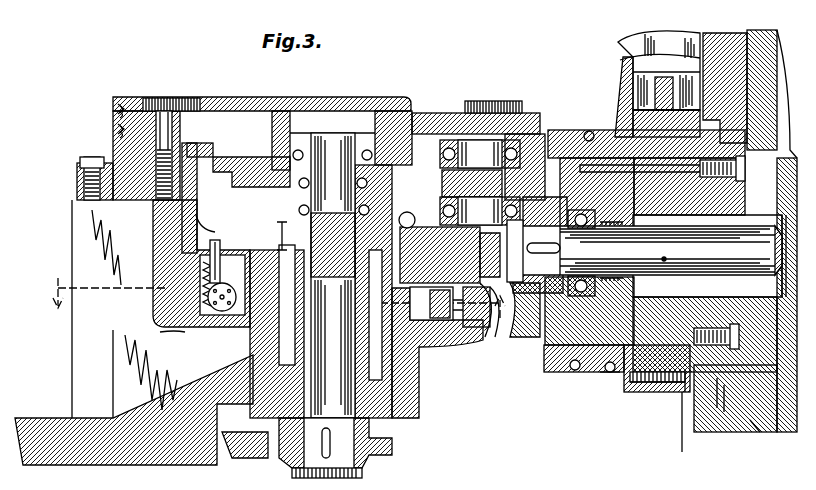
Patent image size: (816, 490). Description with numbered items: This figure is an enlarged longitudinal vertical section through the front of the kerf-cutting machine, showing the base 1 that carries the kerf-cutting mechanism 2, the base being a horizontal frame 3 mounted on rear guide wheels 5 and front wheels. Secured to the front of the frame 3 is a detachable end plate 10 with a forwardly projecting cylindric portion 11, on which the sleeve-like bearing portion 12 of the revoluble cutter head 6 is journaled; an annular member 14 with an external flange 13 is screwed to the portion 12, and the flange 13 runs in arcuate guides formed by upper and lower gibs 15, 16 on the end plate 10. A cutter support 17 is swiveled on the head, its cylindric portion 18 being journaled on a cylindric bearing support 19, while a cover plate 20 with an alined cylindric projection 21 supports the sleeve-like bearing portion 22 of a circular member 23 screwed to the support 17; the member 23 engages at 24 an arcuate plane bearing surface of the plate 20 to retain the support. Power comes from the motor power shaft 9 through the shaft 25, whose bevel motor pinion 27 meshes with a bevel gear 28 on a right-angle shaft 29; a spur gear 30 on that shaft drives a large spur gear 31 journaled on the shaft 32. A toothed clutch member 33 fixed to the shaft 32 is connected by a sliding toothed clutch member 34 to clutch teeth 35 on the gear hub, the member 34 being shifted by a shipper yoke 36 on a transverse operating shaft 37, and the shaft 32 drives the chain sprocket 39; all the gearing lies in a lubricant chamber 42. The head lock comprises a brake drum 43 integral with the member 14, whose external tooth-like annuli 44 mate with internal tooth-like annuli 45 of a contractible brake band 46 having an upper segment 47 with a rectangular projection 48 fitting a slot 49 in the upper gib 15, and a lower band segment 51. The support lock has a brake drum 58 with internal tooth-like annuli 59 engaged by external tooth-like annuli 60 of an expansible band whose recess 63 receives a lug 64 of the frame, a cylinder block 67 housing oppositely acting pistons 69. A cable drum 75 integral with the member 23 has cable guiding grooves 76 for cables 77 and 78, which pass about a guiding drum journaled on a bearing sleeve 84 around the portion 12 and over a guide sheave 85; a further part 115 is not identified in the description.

The kerf-cutting mechanism 2 is at (388, 87).
The horizontal frame 3 is at (781, 100).
The rear guide wheels 5 is at (278, 311).
The revoluble cutter head 6 is at (200, 290).
The power shaft 9 is at (644, 251).
The end plate 10 is at (754, 425).
The cylindric portion 11 is at (664, 366).
The sleeve-like bearing portion 12 is at (603, 369).
The annular external flange 13 is at (717, 408).
The annular member 14 is at (708, 395).
The upper gib 15 is at (772, 94).
The lower gib 16 is at (727, 412).
The cutter support 17 is at (193, 400).
The cylindric portion 18 is at (415, 392).
The cylindric bearing support 19 is at (258, 412).
The cover plate 20 is at (205, 145).
The cylindric projection 21 is at (284, 111).
The sleeve-like bearing portion 22 is at (265, 157).
The circular member 23 is at (429, 113).
The bearing engagement 24 is at (222, 140).
The shaft 25 is at (607, 373).
The bevel motor pinion 27 is at (539, 337).
The bevel gear 28 is at (560, 135).
The right-angle shaft 29 is at (479, 150).
The spur gear 30 is at (515, 134).
The large spur gear 31 is at (196, 215).
The shaft 32 is at (329, 157).
The toothed clutch member 33 is at (277, 237).
The sliding toothed clutch member 34 is at (280, 222).
The clutch teeth 35 is at (288, 194).
The shipper yoke 36 is at (406, 229).
The transverse operating shaft 37 is at (402, 157).
The chain sprocket 39 is at (392, 448).
The chamber 42 is at (197, 218).
The brake drum 43 is at (641, 392).
The external tooth-like annuli 44 is at (664, 260).
The internal tooth-like annuli 45 is at (616, 103).
The contractible brake band 46 is at (681, 390).
The upper segment 47 is at (657, 107).
The rectangular projection 48 is at (690, 110).
The slot 49 is at (614, 134).
The lower band segment 51 is at (682, 433).
The brake drum 58 is at (476, 328).
The internal tooth-like annuli 59 is at (472, 328).
The external tooth-like annuli 60 is at (160, 308).
The recess 63 is at (572, 370).
The lug 64 is at (447, 322).
The cylinder block 67 is at (210, 332).
The pistons 69 is at (160, 332).
The cable drum 75 is at (152, 98).
The cable guiding grooves 76 is at (120, 130).
The cable 77 is at (617, 87).
The cable 78 is at (120, 138).
The bearing sleeve 84 is at (542, 355).
The guide sheave 85 is at (636, 40).
The pin 115 is at (208, 258).
The base 1 is at (787, 27).